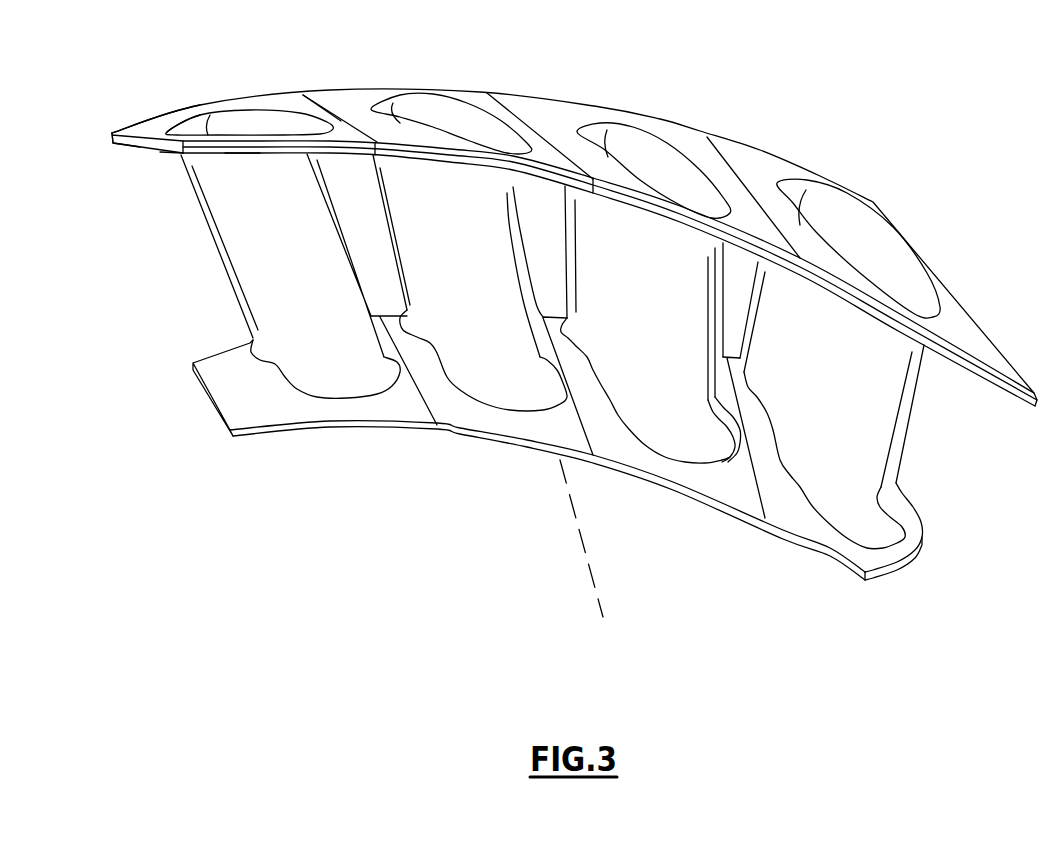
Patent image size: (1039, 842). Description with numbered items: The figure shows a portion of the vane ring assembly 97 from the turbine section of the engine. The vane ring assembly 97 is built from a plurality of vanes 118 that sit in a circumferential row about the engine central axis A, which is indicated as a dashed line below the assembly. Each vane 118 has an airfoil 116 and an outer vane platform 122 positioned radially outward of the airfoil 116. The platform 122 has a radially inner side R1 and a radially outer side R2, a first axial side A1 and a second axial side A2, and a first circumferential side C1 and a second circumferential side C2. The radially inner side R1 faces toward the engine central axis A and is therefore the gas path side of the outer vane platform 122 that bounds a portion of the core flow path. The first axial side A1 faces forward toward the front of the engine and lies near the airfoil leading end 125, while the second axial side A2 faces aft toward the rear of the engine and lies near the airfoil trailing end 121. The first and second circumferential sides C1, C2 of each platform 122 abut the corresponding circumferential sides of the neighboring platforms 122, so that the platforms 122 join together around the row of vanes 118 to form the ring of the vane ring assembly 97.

The vane ring assembly 97 is at (892, 128).
The airfoil 116 is at (243, 240).
The vane 118 is at (478, 440).
The airfoil trailing end 121 is at (237, 305).
The outer vane platform 122 is at (160, 137).
The airfoil leading end 125 is at (370, 363).
The engine central axis A is at (584, 552).
The first axial side A1 is at (238, 148).
The second axial side A2 is at (133, 130).
The first circumferential side C1 is at (120, 147).
The second circumferential side C2 is at (342, 118).
The radially inner side R1 is at (173, 157).
The radially outer side R2 is at (173, 122).